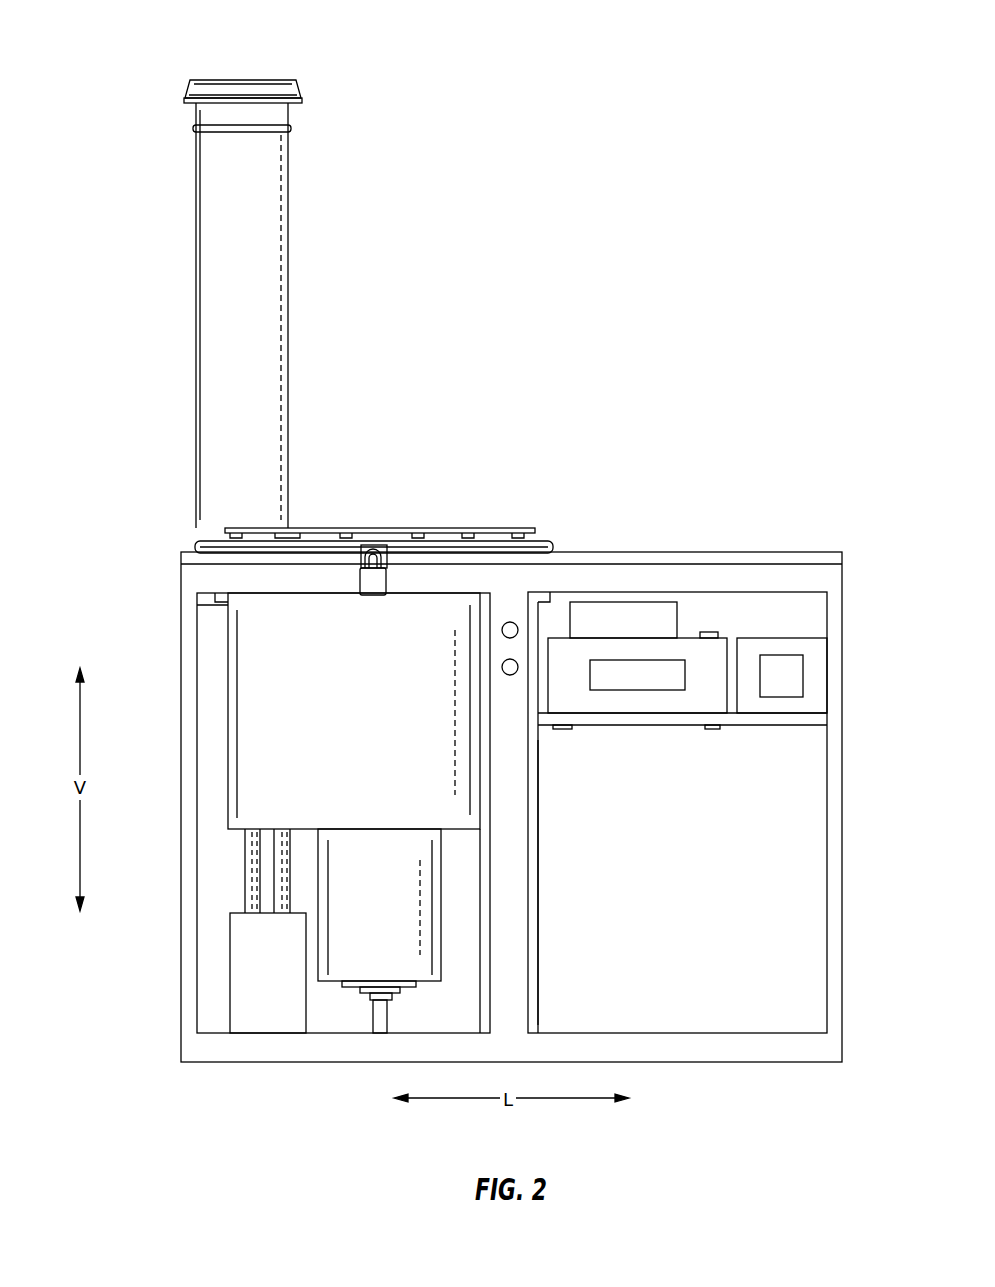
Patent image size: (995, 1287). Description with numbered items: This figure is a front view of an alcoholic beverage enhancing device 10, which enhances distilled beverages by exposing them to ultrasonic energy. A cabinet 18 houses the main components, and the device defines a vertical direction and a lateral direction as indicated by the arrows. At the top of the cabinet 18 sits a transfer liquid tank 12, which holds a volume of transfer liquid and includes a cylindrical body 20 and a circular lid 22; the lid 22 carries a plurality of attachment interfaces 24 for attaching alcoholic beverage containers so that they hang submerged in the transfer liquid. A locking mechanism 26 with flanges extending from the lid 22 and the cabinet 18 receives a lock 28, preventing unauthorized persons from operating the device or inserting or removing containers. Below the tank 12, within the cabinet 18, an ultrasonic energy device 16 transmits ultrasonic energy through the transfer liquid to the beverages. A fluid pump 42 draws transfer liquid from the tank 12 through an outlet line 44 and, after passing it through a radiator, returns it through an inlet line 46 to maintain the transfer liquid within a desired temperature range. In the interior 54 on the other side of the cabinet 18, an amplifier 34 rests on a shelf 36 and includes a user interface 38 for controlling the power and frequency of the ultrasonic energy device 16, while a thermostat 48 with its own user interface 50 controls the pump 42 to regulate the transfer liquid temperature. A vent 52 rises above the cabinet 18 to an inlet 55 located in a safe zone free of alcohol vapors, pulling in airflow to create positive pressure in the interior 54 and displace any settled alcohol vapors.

The alcoholic beverage enhancing device 10 is at (623, 336).
The transfer liquid tank 12 is at (206, 720).
The ultrasonic energy device 16 is at (458, 883).
The cabinet 18 is at (755, 575).
The body 20 is at (245, 790).
The lid 22 is at (470, 530).
The attachment interfaces 24 is at (300, 526).
The locking mechanism 26 is at (401, 549).
The lock 28 is at (372, 595).
The amplifier 34 is at (690, 630).
The shelf 36 is at (760, 726).
The user interface 38 is at (648, 690).
The fluid pump 42 is at (243, 1015).
The outlet line 44 is at (249, 859).
The inlet line 46 is at (282, 878).
The thermostat 48 is at (814, 624).
The user interface 50 is at (807, 672).
The vent 52 is at (316, 311).
The interior 54 is at (773, 923).
The inlet 55 is at (249, 74).